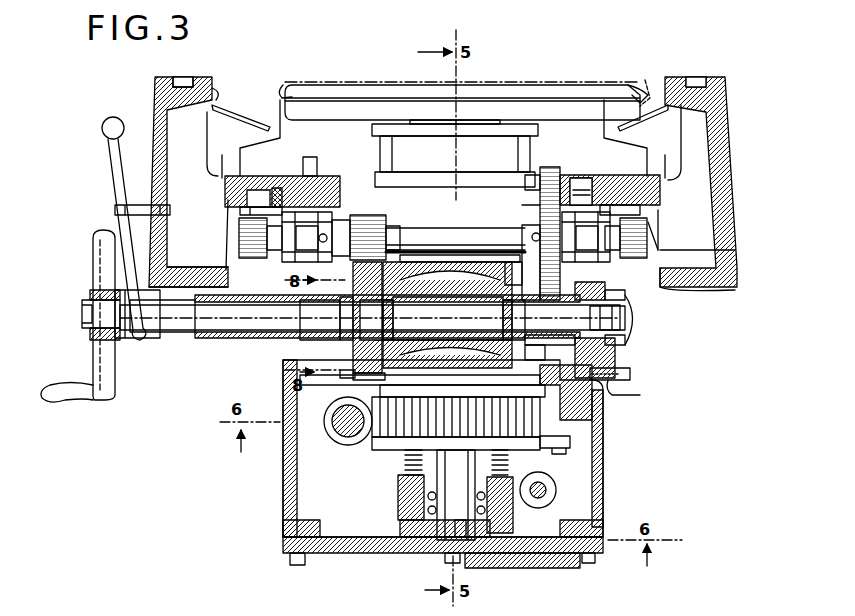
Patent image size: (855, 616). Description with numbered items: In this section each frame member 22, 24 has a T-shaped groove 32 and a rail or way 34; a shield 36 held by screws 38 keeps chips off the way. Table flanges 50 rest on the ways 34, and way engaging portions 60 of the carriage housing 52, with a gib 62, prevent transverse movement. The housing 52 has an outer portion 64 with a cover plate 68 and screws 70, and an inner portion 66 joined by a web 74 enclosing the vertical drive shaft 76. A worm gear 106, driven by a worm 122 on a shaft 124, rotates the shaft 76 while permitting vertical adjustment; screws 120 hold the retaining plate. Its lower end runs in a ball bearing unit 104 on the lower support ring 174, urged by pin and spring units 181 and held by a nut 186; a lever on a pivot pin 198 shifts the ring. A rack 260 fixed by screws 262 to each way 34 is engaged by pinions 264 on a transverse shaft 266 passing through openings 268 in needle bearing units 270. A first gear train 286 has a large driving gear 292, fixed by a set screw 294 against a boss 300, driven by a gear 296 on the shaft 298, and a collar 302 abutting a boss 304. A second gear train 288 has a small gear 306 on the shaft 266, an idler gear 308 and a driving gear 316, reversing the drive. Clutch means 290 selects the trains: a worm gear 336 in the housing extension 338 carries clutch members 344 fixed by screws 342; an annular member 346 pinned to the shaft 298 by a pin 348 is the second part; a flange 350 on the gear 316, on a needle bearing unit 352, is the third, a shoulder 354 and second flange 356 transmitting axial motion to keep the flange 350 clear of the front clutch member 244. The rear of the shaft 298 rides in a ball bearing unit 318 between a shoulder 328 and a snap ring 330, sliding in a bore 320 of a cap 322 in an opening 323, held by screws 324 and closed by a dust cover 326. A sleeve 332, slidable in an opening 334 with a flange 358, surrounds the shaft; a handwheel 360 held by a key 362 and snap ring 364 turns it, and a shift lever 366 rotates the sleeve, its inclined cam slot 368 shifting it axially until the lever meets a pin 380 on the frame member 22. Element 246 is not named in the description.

The left frame member 22 is at (160, 98).
The right frame member 24 is at (726, 101).
The slot 32 is at (186, 77).
The frame base 34 is at (228, 195).
The guide plate 36 is at (252, 118).
The lip 38 is at (213, 88).
The bracket 50 is at (252, 150).
The housing 52 is at (612, 425).
The bearing 60 is at (283, 176).
The bearing block 62 is at (610, 185).
The housing side wall 64 is at (604, 466).
The housing top 66 is at (510, 390).
The housing bottom 68 is at (284, 545).
The foot 70 is at (298, 565).
The housing portion 74 is at (566, 392).
The bearing block 76 is at (397, 484).
The bearing block 104 is at (514, 512).
The worm 106 is at (532, 415).
The plate 120 is at (556, 455).
The bushing 122 is at (328, 440).
The shaft 124 is at (350, 435).
The base plate 174 is at (399, 526).
The spring 181 is at (406, 462).
The shaft 186 is at (440, 540).
The shaft 198 is at (557, 489).
The platen 244 is at (580, 85).
The platen edge 246 is at (290, 85).
The bearing cap 260 is at (240, 214).
The bearing block 262 is at (268, 180).
The gear 264 is at (256, 258).
The shaft 266 is at (488, 232).
The hub 268 is at (570, 222).
The bushing 270 is at (310, 212).
The collar 286 is at (515, 262).
The shaft 288 is at (396, 250).
The key 290 is at (452, 250).
The gear 292 is at (550, 167).
The gear hub 294 is at (535, 232).
The collar 296 is at (550, 345).
The cam 298 is at (447, 330).
The bearing 300 is at (540, 175).
The collar 302 is at (358, 215).
The gear 304 is at (350, 215).
The collar 306 is at (395, 226).
The hub 308 is at (455, 155).
The pin 316 is at (354, 378).
The bearing 318 is at (612, 298).
The ring 320 is at (624, 338).
The end cap 322 is at (617, 352).
The lug 323 is at (608, 390).
The screw 324 is at (632, 375).
The spring washer 326 is at (636, 322).
The nut 328 is at (626, 318).
The washer 330 is at (625, 300).
The sleeve 332 is at (222, 340).
The shaft 334 is at (276, 340).
The bushing 336 is at (468, 296).
The cam member 338 is at (462, 262).
The bushing 342 is at (405, 316).
The ring 344 is at (395, 340).
The pin 346 is at (528, 352).
The ring 348 is at (498, 320).
The worm housing 350 is at (390, 385).
The pin 352 is at (358, 372).
The collar 354 is at (356, 315).
The clutch sleeve 356 is at (375, 292).
The hand crank 358 is at (120, 345).
The hand wheel 360 is at (94, 246).
The hub 362 is at (90, 292).
The nut 364 is at (82, 301).
The lever 366 is at (108, 153).
The sleeve 368 is at (330, 309).
The pin 380 is at (115, 207).